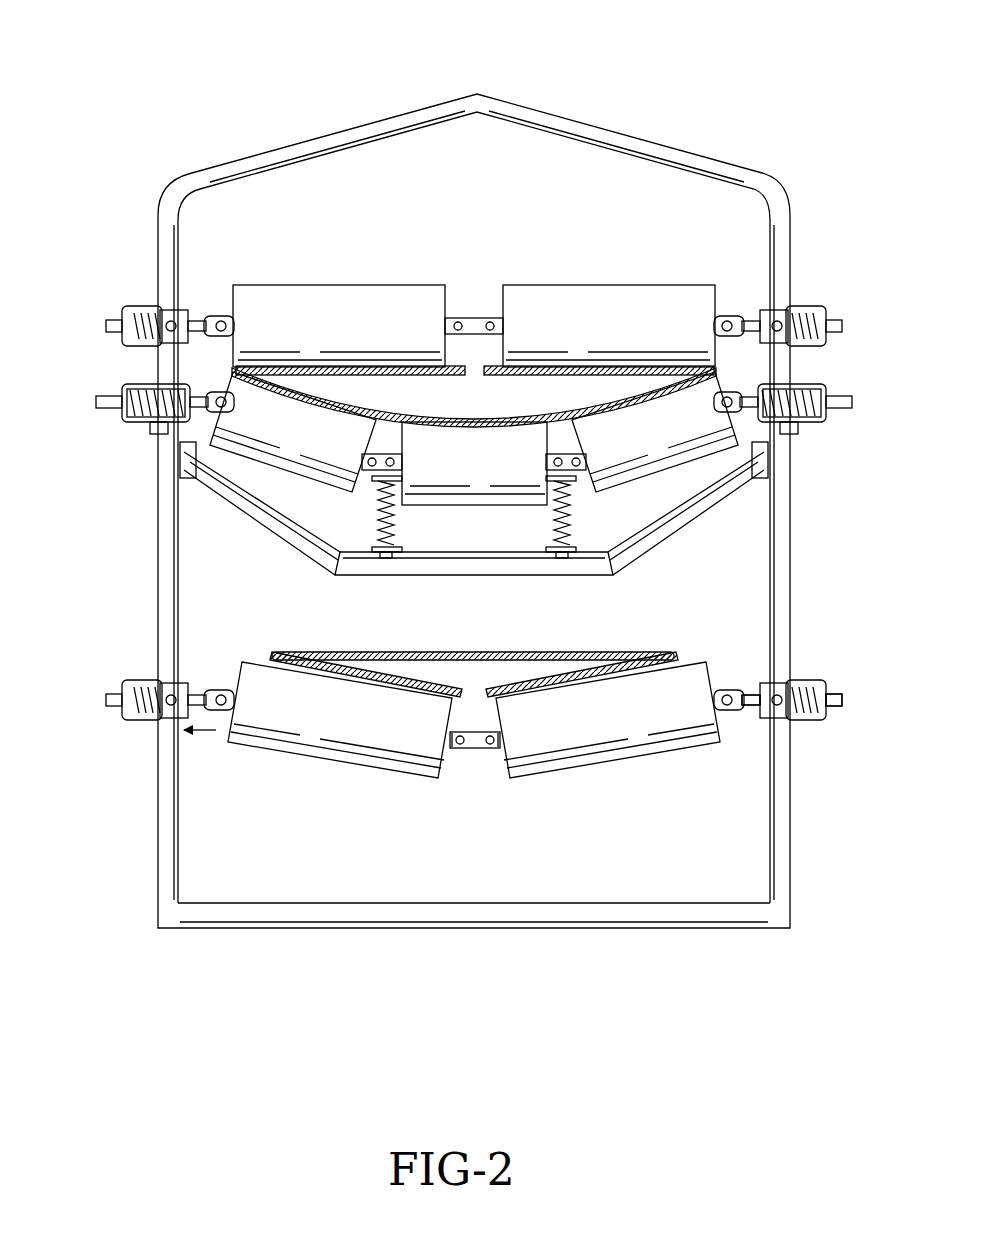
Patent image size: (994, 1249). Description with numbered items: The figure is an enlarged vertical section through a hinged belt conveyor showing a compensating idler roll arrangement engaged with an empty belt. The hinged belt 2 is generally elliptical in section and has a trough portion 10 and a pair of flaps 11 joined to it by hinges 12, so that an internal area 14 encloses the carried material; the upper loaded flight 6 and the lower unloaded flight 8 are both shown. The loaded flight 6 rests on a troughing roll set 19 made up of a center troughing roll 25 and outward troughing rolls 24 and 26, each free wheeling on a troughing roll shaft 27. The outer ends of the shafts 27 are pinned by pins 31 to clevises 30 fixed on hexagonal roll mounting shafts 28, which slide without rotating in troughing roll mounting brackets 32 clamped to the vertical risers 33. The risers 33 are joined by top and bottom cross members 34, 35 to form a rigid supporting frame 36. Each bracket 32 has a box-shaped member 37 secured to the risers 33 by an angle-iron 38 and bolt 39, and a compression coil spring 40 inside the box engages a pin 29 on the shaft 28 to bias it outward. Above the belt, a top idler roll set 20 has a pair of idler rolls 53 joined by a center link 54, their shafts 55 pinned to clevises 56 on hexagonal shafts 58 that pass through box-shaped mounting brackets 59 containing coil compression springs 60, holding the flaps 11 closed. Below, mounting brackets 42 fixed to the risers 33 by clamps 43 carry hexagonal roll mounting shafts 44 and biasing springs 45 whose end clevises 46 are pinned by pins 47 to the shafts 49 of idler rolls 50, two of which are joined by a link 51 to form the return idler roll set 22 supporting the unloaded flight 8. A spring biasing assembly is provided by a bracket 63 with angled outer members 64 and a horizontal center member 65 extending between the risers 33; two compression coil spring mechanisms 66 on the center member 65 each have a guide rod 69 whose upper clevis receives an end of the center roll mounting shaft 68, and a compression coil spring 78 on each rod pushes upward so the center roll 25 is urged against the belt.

The hinged belt 2 is at (432, 648).
The loaded flight 6 is at (576, 532).
The unloaded flight 8 is at (628, 646).
The trough portion 10 is at (462, 424).
The flaps 11 is at (343, 377).
The hinges 12 is at (272, 366).
The internal area 14 is at (465, 406).
The troughing roll set 19 is at (464, 509).
The top idler roll set 20 is at (483, 280).
The return idler roll set 22 is at (468, 752).
The outward troughing roll 24 is at (271, 441).
The center troughing roll 25 is at (426, 471).
The outward troughing roll 26 is at (638, 440).
The troughing roll shaft 27 is at (193, 452).
The roll mounting shaft 28 is at (104, 410).
The pin 29 is at (97, 402).
The clevis 30 is at (770, 455).
The pin 31 is at (762, 470).
The troughing roll mounting bracket 32 is at (112, 378).
The vertical riser 33 is at (796, 626).
The cross member 34 is at (503, 96).
The cross member 35 is at (613, 902).
The supporting frame 36 is at (664, 124).
The box-shaped member 37 is at (168, 384).
The angle-iron 38 is at (802, 424).
The bolt 39 is at (158, 434).
The compression coil spring 40 is at (146, 416).
The mounting bracket 42 is at (140, 722).
The clamp 43 is at (174, 688).
The roll mounting shaft 44 is at (755, 692).
The biasing spring 45 is at (828, 690).
The end clevis 46 is at (188, 686).
The pin 47 is at (222, 712).
The shaft 49 is at (228, 690).
The idler roll 50 is at (336, 728).
The link 51 is at (478, 748).
The idler roll 53 is at (326, 331).
The center link 54 is at (468, 320).
The shaft 55 is at (228, 320).
The clevis 56 is at (730, 318).
The hexagonal shaft 58 is at (841, 318).
The box-shaped mounting bracket 59 is at (809, 302).
The coil compression spring 60 is at (163, 308).
The bracket 63 is at (378, 560).
The angled outer member 64 is at (268, 518).
The horizontal center member 65 is at (513, 568).
The compression coil spring mechanism 66 is at (606, 556).
The idler roll mounting shaft 68 is at (394, 458).
The guide rod 69 is at (551, 521).
The compression coil spring 78 is at (380, 529).